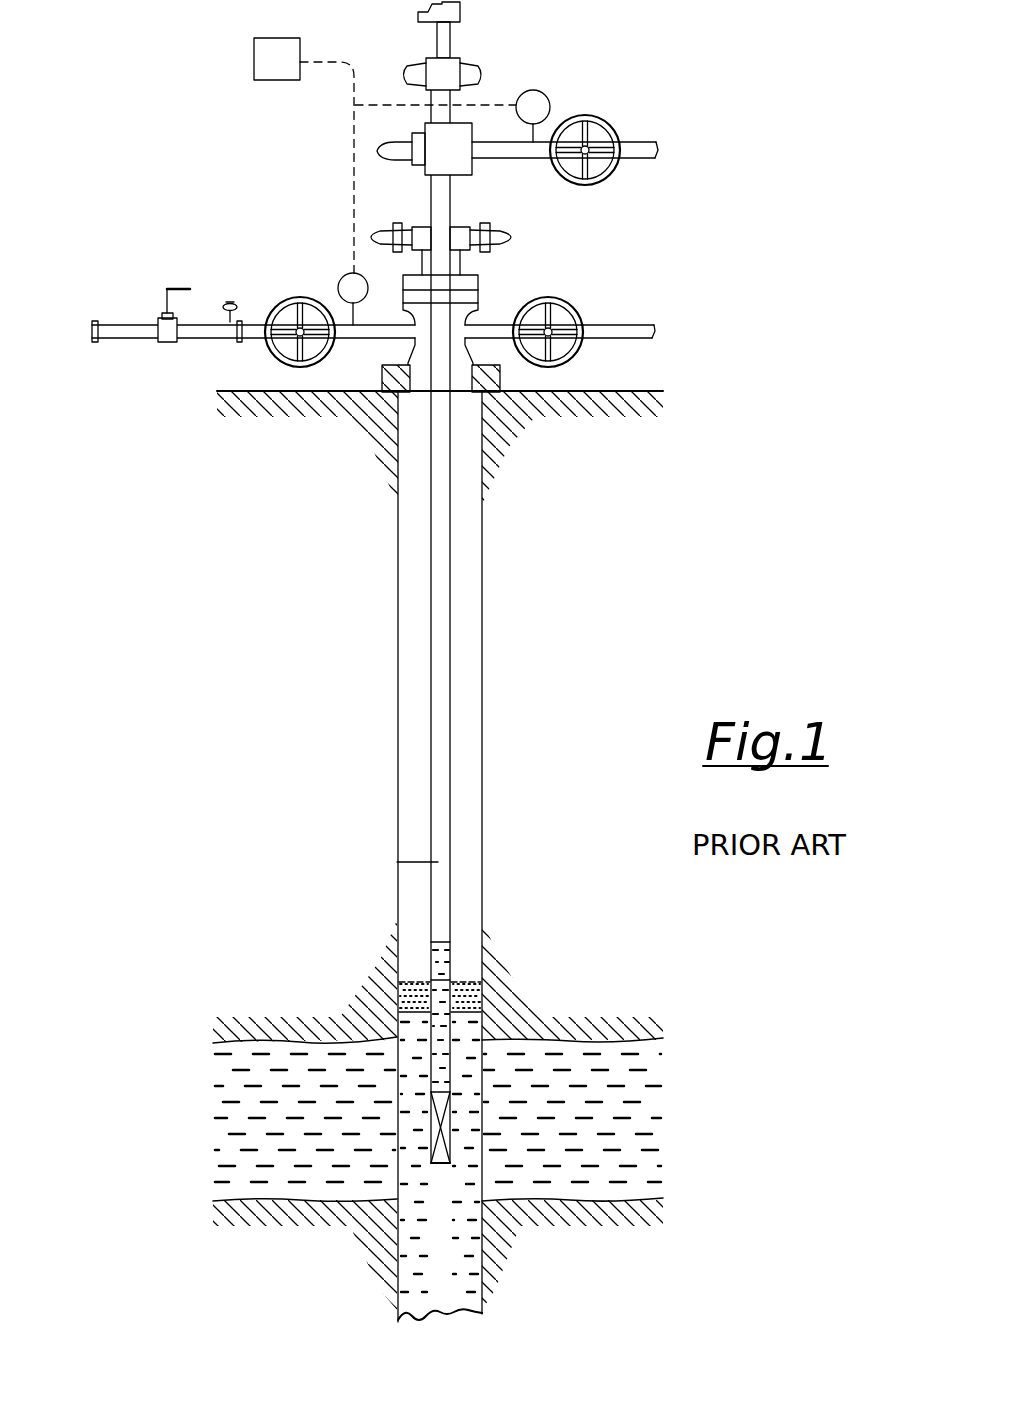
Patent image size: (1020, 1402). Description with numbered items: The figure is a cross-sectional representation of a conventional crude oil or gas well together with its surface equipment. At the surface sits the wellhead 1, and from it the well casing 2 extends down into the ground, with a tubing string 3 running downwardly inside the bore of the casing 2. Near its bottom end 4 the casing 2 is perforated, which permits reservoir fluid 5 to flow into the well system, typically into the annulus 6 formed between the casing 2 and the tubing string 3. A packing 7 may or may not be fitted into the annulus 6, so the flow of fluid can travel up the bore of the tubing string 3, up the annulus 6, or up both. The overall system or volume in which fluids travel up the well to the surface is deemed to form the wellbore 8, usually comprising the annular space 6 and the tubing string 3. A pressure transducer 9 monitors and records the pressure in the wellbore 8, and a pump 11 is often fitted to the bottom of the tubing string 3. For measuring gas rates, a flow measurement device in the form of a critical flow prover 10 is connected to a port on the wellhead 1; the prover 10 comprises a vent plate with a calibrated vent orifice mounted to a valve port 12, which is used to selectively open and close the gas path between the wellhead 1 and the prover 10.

The wellhead 1 is at (588, 237).
The well casing 2 is at (397, 597).
The tubing string 3 is at (428, 678).
The bottom end 4 is at (463, 1027).
The reservoir fluid 5 is at (437, 792).
The annulus 6 is at (412, 722).
The packing 7 is at (397, 1000).
The wellbore 8 is at (412, 880).
The pressure transducer 9 is at (340, 280).
The critical flow prover 10 is at (93, 320).
The pump 11 is at (427, 1137).
The valve port 12 is at (293, 300).